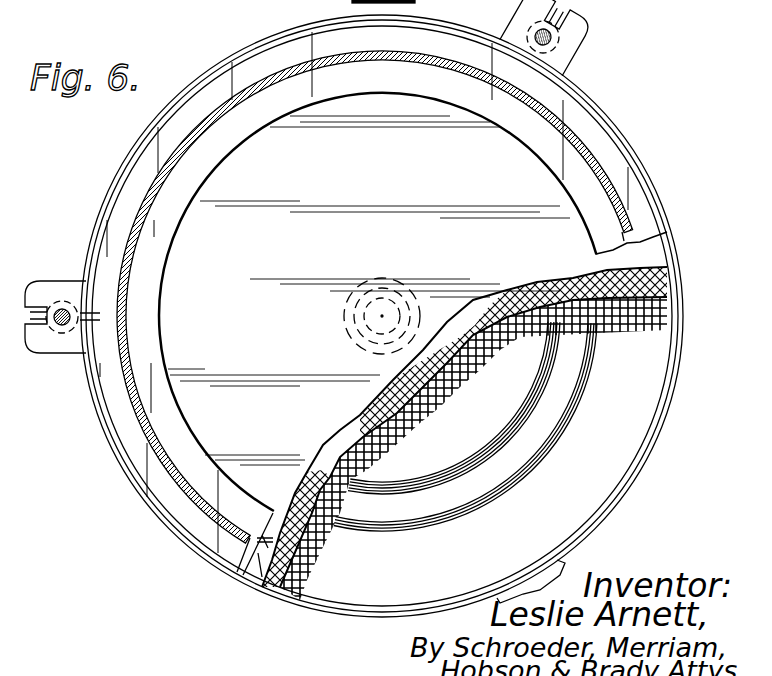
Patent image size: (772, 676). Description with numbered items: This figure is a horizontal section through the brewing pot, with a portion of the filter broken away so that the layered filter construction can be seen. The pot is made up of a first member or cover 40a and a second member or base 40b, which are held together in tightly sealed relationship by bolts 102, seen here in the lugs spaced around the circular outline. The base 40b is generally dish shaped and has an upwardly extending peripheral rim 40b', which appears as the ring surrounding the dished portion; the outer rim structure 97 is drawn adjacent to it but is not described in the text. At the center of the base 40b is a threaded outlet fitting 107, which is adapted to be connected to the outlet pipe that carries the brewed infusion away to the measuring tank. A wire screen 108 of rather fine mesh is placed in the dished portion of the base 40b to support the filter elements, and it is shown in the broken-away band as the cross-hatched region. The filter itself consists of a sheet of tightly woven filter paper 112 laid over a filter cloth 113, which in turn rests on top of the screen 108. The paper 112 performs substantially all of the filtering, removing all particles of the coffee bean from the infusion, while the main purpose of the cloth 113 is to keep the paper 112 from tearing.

The bolts 102 is at (552, 38).
The cover 40a is at (583, 157).
The base 40b is at (521, 426).
The peripheral rim 40b' is at (355, 316).
The rim body 97 is at (190, 517).
The threaded outlet fitting 107 is at (358, 321).
The wire screen 108 is at (288, 606).
The filter paper 112 is at (265, 557).
The filter cloth 113 is at (262, 577).